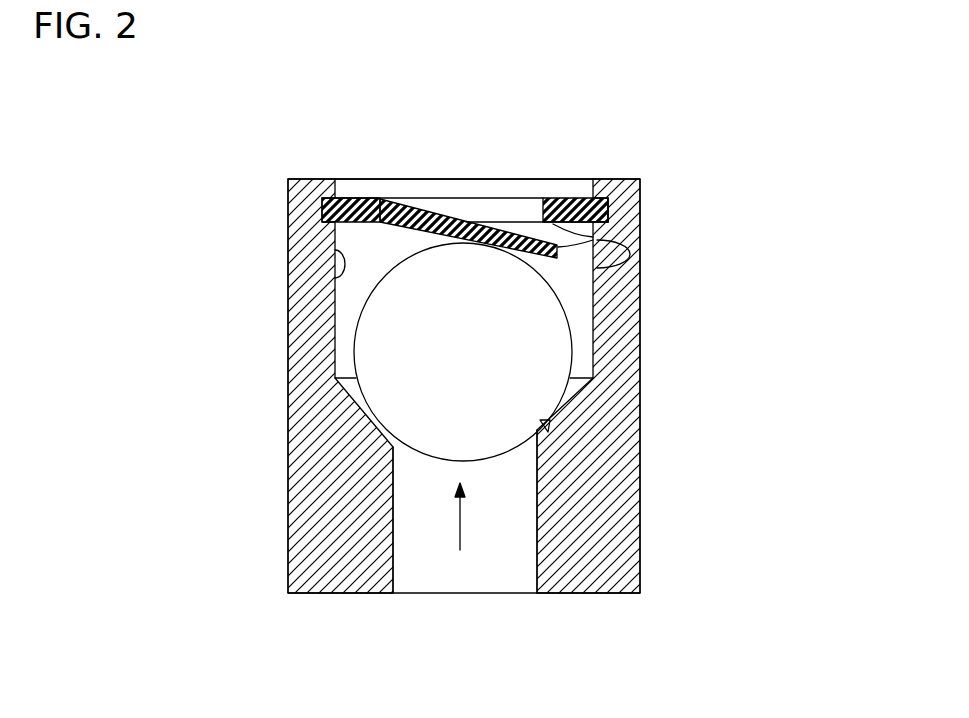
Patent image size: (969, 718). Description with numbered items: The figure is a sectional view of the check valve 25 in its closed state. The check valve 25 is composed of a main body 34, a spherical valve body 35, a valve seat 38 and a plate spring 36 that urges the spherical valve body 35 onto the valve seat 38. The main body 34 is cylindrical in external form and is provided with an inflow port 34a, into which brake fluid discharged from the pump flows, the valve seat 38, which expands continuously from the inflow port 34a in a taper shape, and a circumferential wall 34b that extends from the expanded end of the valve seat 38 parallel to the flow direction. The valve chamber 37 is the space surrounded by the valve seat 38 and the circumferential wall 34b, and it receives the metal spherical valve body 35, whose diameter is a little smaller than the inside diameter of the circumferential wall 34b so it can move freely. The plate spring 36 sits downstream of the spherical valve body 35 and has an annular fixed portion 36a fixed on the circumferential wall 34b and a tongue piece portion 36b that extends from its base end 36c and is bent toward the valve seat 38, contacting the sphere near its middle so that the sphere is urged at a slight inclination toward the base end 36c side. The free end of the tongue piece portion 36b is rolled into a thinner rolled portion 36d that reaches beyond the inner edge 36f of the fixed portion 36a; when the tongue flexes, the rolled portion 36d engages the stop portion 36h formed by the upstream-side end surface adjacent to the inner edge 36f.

The check valve 25 is at (287, 129).
The main body 34 is at (315, 527).
The inflow port 34a is at (477, 555).
The circumferential wall 34b is at (338, 252).
The spherical valve body 35 is at (410, 350).
The plate spring 36 is at (462, 198).
The fixed portion 36a is at (575, 202).
The tongue piece portion 36b is at (423, 203).
The base end 36c is at (380, 200).
The rolled portion 36d is at (597, 268).
The inner edge 36f is at (528, 203).
The stop portion 36h is at (607, 213).
The valve chamber 37 is at (575, 293).
The valve seat 38 is at (552, 428).